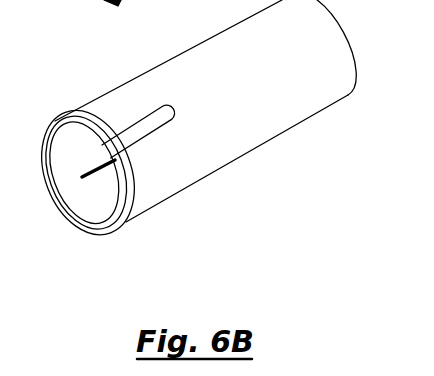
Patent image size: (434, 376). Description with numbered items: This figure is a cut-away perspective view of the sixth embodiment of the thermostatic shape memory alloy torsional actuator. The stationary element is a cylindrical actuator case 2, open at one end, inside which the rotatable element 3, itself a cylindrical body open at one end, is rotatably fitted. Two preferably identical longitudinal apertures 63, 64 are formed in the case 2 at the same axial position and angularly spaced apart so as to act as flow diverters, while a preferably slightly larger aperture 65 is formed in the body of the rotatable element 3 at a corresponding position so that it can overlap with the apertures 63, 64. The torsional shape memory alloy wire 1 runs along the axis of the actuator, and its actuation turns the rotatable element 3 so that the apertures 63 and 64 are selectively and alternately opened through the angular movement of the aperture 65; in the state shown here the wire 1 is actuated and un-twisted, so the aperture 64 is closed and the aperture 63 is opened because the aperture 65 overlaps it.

The torsional shape memory alloy wire 1 is at (84, 176).
The cylindrical actuator case 2 is at (201, 151).
The rotatable element 3 is at (116, 207).
The longitudinal aperture 63 is at (110, 95).
The longitudinal aperture 64 is at (155, 131).
The aperture 65 is at (64, 131).